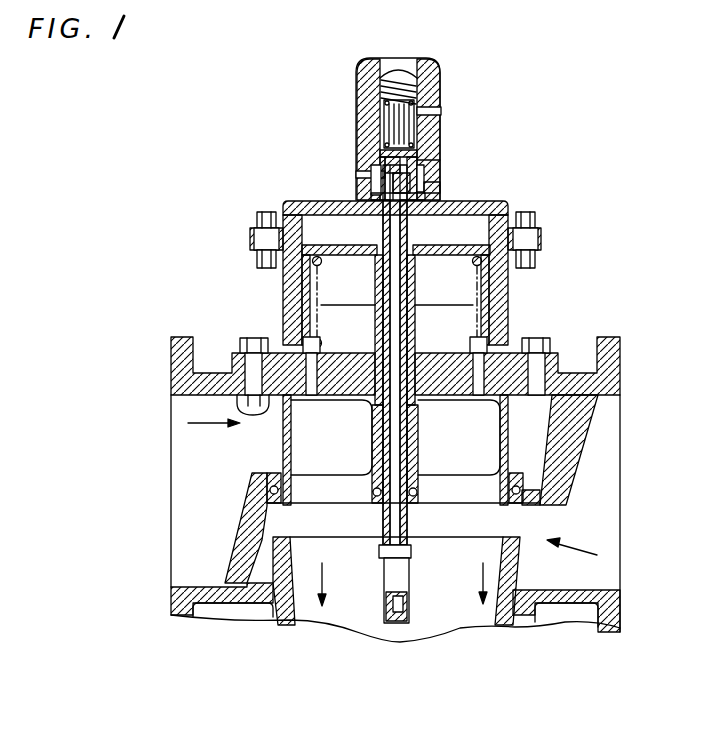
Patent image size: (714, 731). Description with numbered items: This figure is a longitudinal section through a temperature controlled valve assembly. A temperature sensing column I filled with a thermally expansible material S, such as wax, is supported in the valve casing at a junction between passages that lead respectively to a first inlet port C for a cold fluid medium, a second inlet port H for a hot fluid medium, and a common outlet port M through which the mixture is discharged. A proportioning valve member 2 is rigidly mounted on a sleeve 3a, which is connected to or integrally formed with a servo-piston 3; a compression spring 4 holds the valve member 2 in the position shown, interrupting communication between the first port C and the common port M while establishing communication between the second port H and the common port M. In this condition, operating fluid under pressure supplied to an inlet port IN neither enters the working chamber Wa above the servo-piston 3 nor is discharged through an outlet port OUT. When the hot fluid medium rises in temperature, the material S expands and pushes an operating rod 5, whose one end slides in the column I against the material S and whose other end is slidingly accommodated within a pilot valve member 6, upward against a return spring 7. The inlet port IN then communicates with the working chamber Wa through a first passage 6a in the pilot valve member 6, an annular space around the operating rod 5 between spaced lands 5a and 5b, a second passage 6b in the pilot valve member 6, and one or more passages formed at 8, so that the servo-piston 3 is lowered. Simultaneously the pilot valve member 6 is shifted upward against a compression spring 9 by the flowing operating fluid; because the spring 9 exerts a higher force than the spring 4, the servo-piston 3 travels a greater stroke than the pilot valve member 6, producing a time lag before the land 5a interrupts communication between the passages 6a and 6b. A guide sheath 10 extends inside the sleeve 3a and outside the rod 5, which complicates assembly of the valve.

The proportioning valve member 2 is at (275, 433).
The servo-piston 3 is at (300, 292).
The sleeve 3a is at (368, 398).
The compression spring 4 is at (317, 320).
The operating rod 5 is at (402, 426).
The land 5a is at (372, 168).
The land 5b is at (372, 196).
The pilot valve member 6 is at (430, 160).
The first passage 6a is at (372, 184).
The second passage 6b is at (430, 178).
The return spring 7 is at (425, 103).
The passages 8 is at (440, 193).
The compression spring 9 is at (383, 108).
The guide sheath 10 is at (462, 300).
The inlet port IN is at (357, 173).
The outlet port OUT is at (428, 114).
The working chamber Wa is at (467, 228).
The first inlet port C is at (265, 491).
The second inlet port H is at (515, 517).
The common outlet port M is at (347, 612).
The temperature sensing column I is at (400, 612).
The thermally expansible material S is at (400, 600).